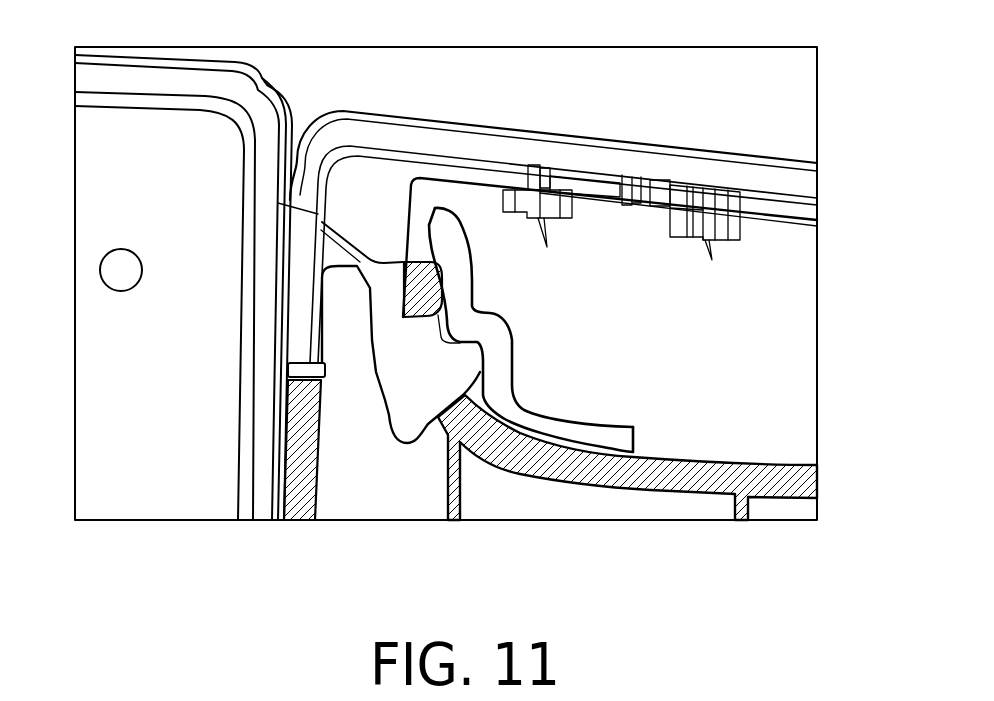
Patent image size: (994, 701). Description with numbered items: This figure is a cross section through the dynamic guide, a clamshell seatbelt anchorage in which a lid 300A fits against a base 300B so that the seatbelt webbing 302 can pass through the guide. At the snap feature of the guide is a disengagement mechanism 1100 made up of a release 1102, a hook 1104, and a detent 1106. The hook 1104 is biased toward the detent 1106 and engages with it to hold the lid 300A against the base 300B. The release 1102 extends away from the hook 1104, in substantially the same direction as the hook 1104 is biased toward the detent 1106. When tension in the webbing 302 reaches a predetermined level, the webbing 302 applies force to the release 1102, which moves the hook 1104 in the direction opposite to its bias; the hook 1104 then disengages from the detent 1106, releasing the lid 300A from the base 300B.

The lid 300A is at (568, 134).
The base 300B is at (530, 477).
The webbing 302 is at (622, 418).
The disengagement mechanism 1100 is at (542, 302).
The release 1102 is at (485, 365).
The hook 1104 is at (388, 423).
The detent 1106 is at (418, 258).